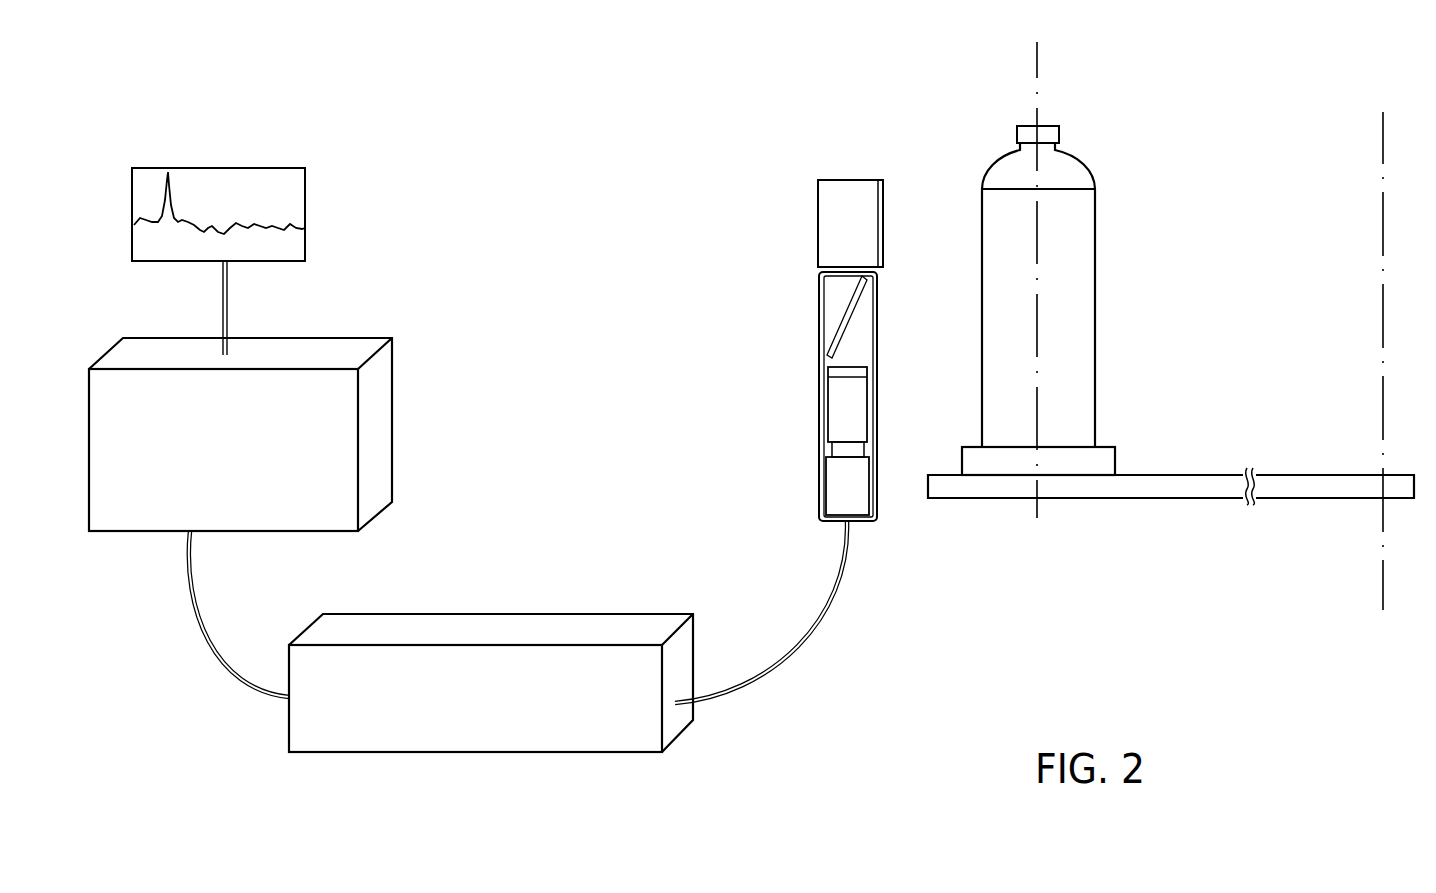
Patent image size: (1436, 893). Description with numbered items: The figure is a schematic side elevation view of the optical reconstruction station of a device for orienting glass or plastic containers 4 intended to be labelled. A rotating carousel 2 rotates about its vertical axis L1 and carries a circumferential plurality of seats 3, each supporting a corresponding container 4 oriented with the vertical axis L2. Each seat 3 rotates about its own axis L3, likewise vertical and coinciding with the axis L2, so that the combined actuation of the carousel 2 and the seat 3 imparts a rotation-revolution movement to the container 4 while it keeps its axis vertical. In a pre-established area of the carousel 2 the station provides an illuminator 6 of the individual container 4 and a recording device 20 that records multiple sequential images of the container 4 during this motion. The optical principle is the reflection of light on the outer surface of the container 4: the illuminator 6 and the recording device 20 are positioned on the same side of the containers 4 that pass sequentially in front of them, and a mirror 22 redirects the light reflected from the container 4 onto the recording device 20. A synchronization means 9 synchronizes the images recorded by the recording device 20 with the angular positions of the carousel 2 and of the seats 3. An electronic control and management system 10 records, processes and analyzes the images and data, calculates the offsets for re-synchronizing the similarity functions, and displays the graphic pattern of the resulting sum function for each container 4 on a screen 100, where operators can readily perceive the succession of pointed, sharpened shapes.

The screen 100 is at (293, 165).
The electronic control and management system 10 is at (395, 419).
The synchronization means 9 is at (535, 615).
The illuminator 6 is at (827, 179).
The mirror 22 is at (843, 309).
The recording device 20 is at (848, 476).
The container 4 is at (1100, 251).
The seat 3 is at (1111, 445).
The rotating carousel 2 is at (1193, 474).
The vertical axis of the carousel L1 is at (1383, 197).
The vertical axis of the container L2 is at (1127, 277).
The axis of the seat L3 is at (1037, 73).